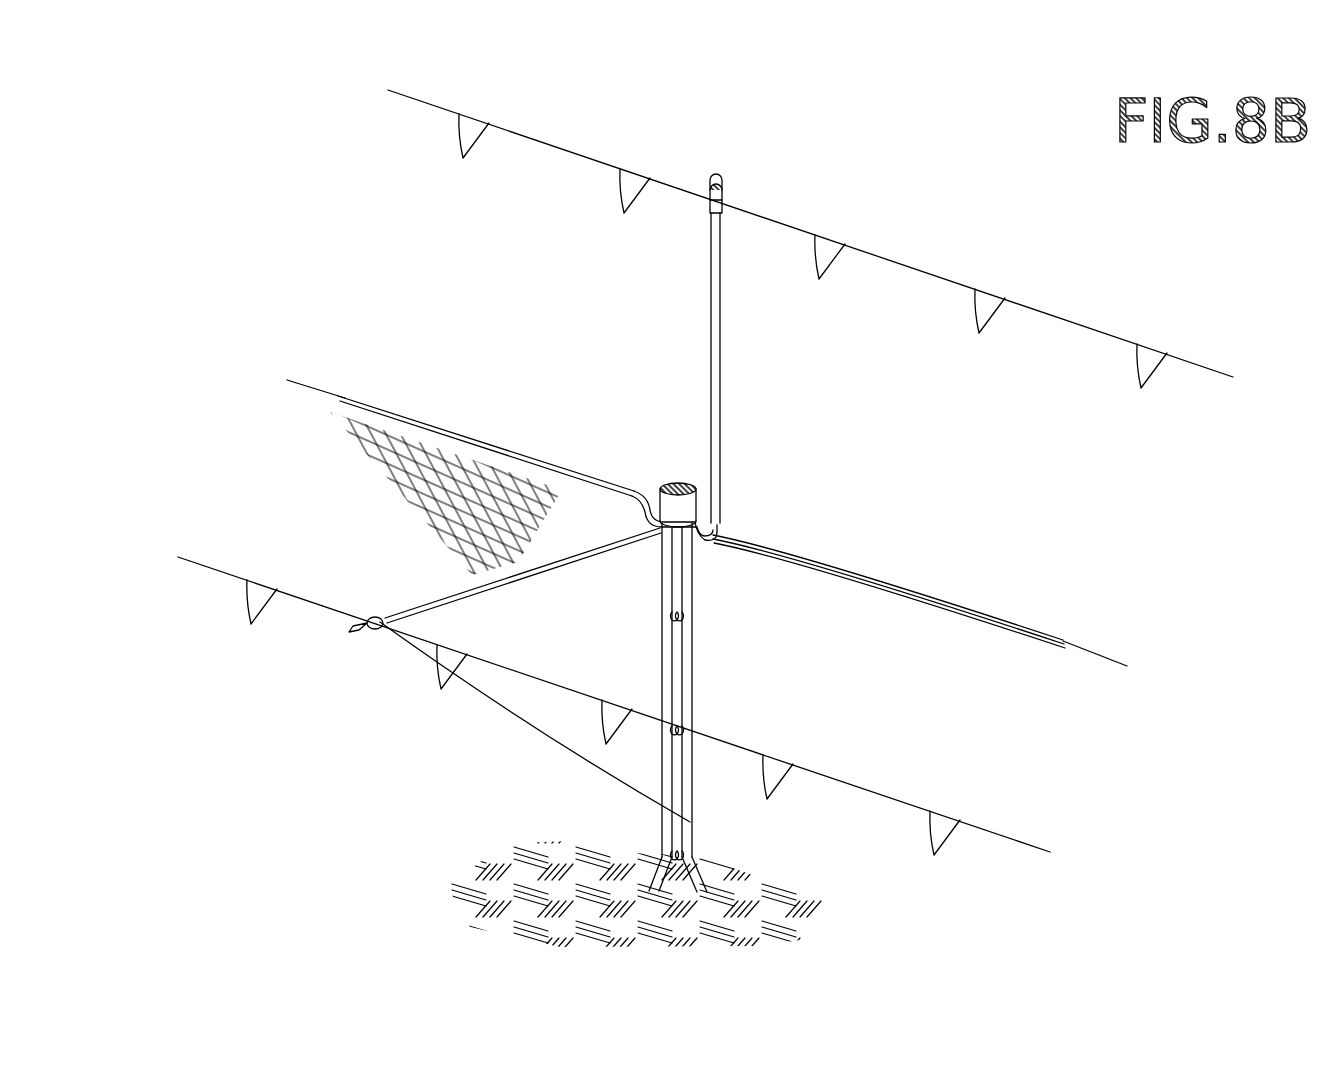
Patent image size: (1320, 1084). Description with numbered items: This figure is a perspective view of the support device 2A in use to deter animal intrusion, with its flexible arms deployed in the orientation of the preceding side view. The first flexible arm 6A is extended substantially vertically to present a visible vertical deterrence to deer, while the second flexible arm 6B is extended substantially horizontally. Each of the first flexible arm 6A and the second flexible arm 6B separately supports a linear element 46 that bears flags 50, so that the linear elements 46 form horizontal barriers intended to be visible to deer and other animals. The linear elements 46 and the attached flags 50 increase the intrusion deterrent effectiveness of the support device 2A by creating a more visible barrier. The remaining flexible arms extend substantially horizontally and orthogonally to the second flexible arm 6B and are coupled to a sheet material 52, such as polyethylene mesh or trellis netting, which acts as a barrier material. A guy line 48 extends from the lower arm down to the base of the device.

The fence pole assembly 2A is at (808, 486).
The first flexible arm 6A is at (710, 355).
The second flexible arm 6B is at (547, 570).
The linear element 46 is at (543, 140).
The guy line 48 is at (552, 740).
The flags 50 is at (620, 192).
The sheet material 52 is at (394, 452).